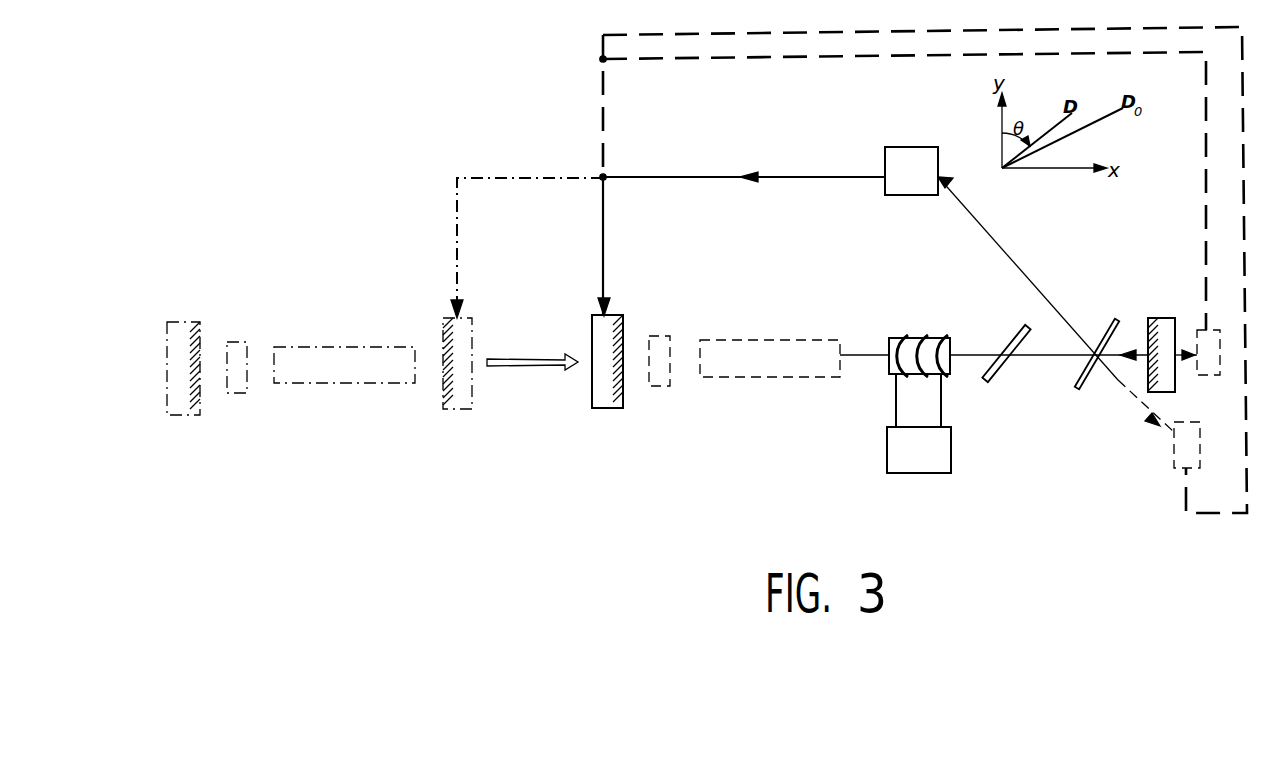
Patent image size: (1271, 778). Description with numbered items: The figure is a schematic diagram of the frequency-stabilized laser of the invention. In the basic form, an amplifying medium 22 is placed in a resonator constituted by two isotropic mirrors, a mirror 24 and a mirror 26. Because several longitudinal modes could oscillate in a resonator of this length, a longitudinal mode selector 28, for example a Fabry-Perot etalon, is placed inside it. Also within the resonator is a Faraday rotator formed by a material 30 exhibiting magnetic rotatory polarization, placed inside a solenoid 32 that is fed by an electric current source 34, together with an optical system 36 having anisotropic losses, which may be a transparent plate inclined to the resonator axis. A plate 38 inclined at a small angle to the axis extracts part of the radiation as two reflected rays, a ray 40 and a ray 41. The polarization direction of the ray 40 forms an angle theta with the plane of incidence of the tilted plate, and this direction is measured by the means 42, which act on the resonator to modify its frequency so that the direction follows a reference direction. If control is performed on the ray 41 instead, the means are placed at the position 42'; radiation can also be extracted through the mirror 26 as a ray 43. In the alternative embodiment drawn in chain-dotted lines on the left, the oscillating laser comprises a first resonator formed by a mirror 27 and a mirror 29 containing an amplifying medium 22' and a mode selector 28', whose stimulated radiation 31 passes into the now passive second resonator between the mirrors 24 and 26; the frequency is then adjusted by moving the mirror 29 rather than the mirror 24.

The amplifying medium 22 is at (769, 389).
The amplifying medium 22' is at (344, 406).
The mirror 24 is at (602, 390).
The mirror 26 is at (1162, 323).
The mirror 27 is at (180, 330).
The longitudinal mode selector 28 is at (691, 329).
The mode selector 28' is at (239, 403).
The mirror 29 is at (465, 402).
The material exhibiting magnetic rotatory polarization 30 is at (888, 345).
The stimulated radiation 31 is at (530, 358).
The solenoid 32 is at (905, 337).
The electric current source 34 is at (893, 442).
The optical system with anisotropic losses 36 is at (992, 378).
The plate 38 is at (1077, 382).
The reflected ray 40 is at (1047, 297).
The reflected ray 41 is at (1130, 388).
The means for measuring and controlling polarization direction 42 is at (883, 151).
The means for measuring and controlling polarization direction 42' is at (1157, 472).
The ray 43 is at (1177, 358).